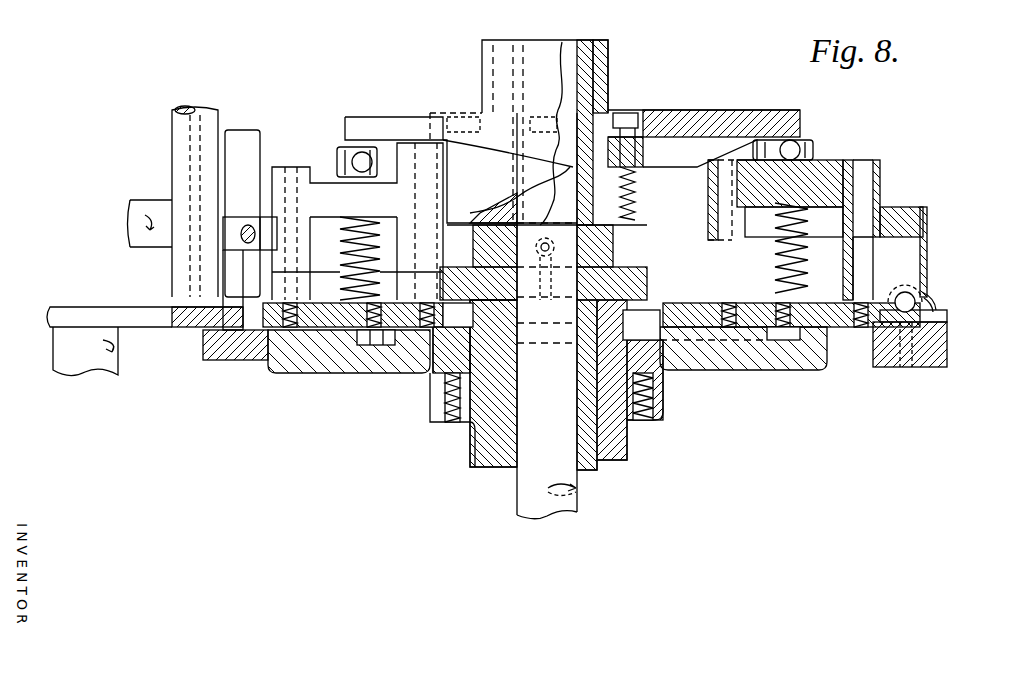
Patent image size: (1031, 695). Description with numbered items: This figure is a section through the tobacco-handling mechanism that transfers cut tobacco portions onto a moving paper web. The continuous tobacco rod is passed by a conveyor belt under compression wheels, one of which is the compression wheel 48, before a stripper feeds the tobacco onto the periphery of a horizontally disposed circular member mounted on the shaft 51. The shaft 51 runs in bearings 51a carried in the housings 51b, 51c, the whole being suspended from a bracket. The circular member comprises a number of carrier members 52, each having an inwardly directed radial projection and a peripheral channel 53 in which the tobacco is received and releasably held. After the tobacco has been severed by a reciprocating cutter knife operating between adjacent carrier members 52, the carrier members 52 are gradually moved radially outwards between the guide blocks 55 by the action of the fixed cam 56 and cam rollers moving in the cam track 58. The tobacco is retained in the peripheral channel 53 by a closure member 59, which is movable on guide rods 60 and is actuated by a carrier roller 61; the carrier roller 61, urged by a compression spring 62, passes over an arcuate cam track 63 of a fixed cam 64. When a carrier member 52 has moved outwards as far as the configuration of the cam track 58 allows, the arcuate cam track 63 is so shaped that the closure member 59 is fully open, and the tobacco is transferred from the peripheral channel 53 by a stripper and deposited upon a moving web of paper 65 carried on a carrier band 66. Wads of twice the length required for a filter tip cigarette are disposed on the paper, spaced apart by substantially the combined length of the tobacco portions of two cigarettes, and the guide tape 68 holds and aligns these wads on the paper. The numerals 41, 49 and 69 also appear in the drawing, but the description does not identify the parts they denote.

The lever arm 41 is at (248, 140).
The compression wheel 48 is at (88, 312).
The block 49 is at (215, 352).
The shaft 51 is at (535, 483).
The bearings 51a is at (593, 467).
The housing 51b is at (487, 447).
The housing 51c is at (482, 53).
The carrier member 52 is at (840, 307).
The peripheral channel 53 is at (912, 300).
The guide blocks 55 is at (680, 312).
The fixed cam 56 is at (322, 365).
The cam track 58 is at (420, 345).
The closure member 59 is at (223, 273).
The guide rods 60 is at (730, 185).
The carrier roller 61 is at (360, 150).
The compression spring 62 is at (810, 228).
The arcuate cam track 63 is at (407, 140).
The fixed cam 64 is at (733, 110).
The web of paper 65 is at (947, 318).
The carrier band 66 is at (907, 325).
The guide tape 68 is at (940, 347).
The spring clip 69 is at (938, 300).